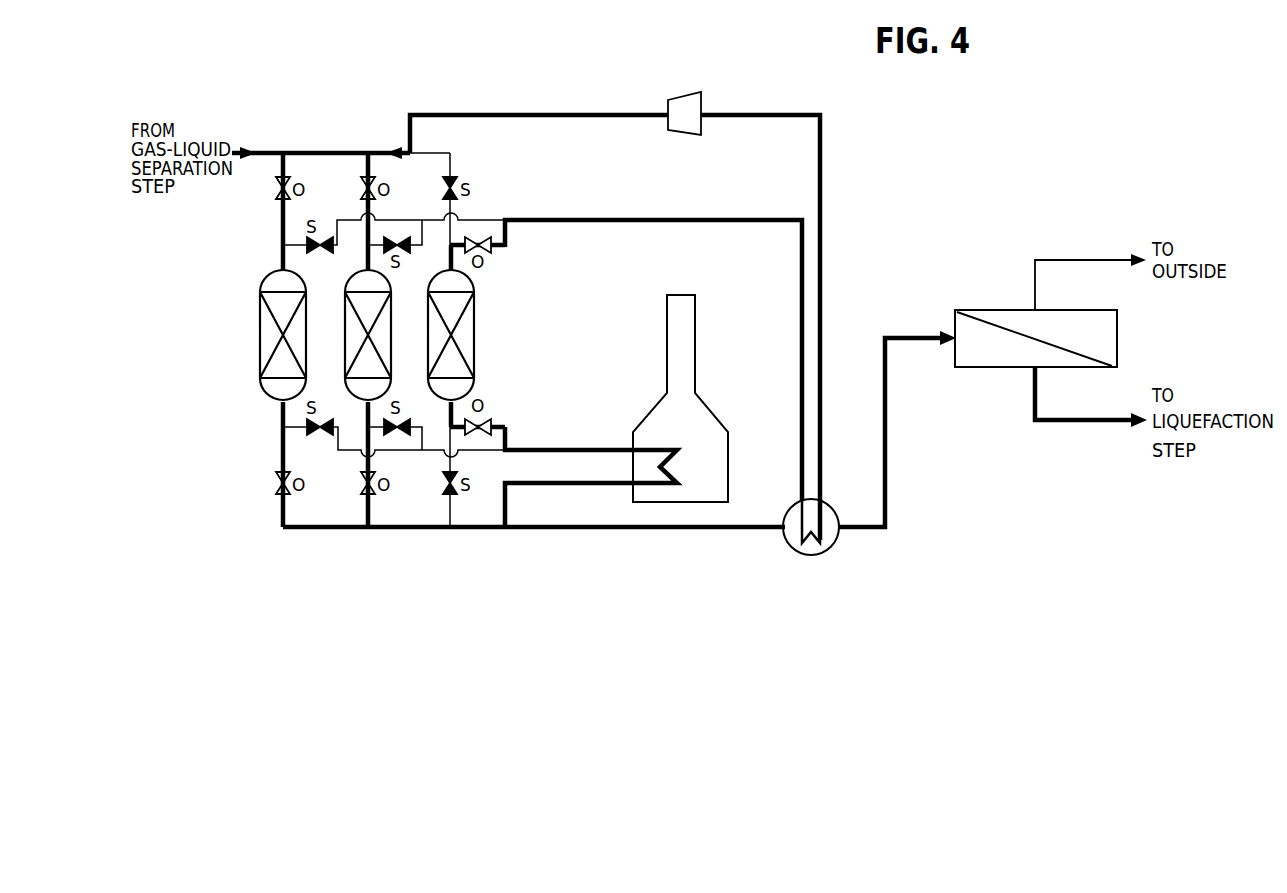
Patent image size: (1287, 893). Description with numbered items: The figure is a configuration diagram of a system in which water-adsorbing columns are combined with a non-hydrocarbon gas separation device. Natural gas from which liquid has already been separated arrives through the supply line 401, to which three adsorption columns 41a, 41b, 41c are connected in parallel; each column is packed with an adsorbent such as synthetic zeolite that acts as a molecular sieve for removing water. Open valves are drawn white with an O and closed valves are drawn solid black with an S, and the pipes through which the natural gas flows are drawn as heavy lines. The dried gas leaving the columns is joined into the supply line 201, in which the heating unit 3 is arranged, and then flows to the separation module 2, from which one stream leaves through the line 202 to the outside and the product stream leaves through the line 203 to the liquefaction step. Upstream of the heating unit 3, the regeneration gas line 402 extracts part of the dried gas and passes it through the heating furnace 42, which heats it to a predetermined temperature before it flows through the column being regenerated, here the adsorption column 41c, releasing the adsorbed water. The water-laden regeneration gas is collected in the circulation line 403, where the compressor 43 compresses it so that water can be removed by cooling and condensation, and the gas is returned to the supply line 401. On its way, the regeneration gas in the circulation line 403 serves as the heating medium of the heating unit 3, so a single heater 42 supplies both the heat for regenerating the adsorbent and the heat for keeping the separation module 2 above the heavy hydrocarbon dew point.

The supply line 401 is at (271, 140).
The compressor 43 is at (685, 98).
The circulation line 403 is at (606, 207).
The regeneration gas line 402 is at (576, 439).
The adsorption column 41a is at (260, 334).
The adsorption column 41b is at (345, 300).
The adsorption column 41c is at (476, 333).
The heating furnace 42 is at (696, 352).
The heating unit 3 is at (812, 556).
The supply line 201 is at (886, 439).
The separation module 2 is at (989, 310).
The line to outside 202 is at (1087, 246).
The line to liquefaction step 203 is at (1076, 423).